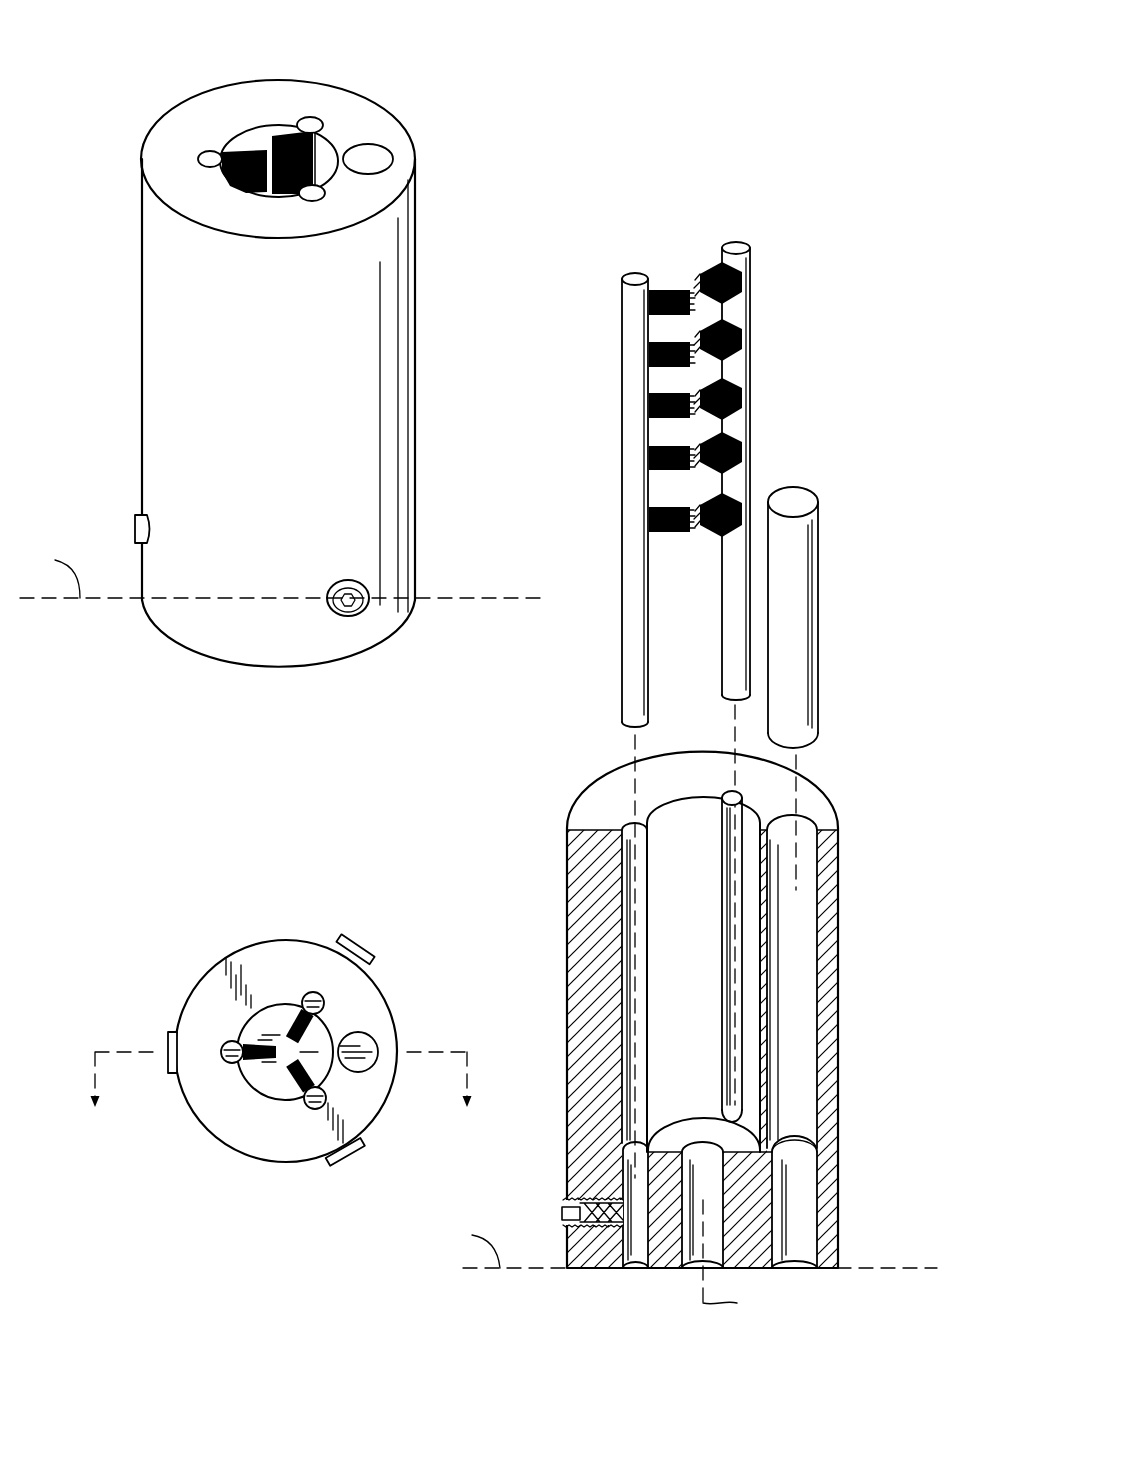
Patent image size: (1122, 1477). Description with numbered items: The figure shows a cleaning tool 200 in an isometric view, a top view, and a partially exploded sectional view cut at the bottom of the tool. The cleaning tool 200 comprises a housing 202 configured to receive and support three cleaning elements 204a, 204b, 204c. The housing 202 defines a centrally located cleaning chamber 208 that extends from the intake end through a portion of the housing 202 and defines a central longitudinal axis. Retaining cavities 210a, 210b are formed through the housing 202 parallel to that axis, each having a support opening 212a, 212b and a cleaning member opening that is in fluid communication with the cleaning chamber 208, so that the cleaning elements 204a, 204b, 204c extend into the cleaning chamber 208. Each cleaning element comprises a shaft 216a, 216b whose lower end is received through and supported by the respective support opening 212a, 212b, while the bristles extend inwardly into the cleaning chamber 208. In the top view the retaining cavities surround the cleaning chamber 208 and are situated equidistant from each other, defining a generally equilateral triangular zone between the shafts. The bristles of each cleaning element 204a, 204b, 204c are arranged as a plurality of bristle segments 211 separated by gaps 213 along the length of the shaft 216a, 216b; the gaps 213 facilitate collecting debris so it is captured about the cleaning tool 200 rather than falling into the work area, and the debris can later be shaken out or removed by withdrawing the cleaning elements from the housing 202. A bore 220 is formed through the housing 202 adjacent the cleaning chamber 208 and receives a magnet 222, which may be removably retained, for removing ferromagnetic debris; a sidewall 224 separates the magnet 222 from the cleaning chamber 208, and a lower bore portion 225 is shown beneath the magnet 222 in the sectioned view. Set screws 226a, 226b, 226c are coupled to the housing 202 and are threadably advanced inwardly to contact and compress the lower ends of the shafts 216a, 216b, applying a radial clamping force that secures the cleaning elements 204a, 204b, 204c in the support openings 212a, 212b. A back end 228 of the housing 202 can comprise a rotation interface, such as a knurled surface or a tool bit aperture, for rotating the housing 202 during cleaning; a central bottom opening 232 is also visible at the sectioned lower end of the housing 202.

In FIG. 4, the cleaning tool 200 is at (188, 56).
In FIG. 5, the cleaning tool 200 is at (164, 962).
In FIG. 6, the cleaning tool 200 is at (852, 547).
In FIG. 4, the housing 202 is at (390, 292).
In FIG. 5, the housing 202 is at (373, 1005).
In FIG. 6, the housing 202 is at (827, 1135).
In FIG. 4, the cleaning element 204a is at (200, 159).
In FIG. 5, the cleaning element 204a is at (226, 1046).
In FIG. 6, the cleaning element 204a is at (610, 311).
In FIG. 4, the cleaning element 204b is at (287, 126).
In FIG. 5, the cleaning element 204b is at (312, 998).
In FIG. 6, the cleaning element 204b is at (763, 213).
In FIG. 4, the cleaning element 204c is at (327, 195).
In FIG. 5, the cleaning element 204c is at (310, 1105).
In FIG. 4, the cleaning chamber 208 is at (253, 138).
In FIG. 5, the cleaning chamber 208 is at (278, 1017).
In FIG. 6, the cleaning chamber 208 is at (681, 833).
In FIG. 6, the retaining cavity 210a is at (632, 953).
In FIG. 6, the retaining cavity 210b is at (731, 800).
In FIG. 6, the bristle segments 211 is at (672, 343).
In FIG. 6, the support opening 212a is at (640, 1252).
In FIG. 6, the support opening 212b is at (727, 1113).
In FIG. 6, the gaps 213 is at (684, 377).
In FIG. 6, the shaft 216a is at (633, 462).
In FIG. 6, the shaft 216b is at (750, 297).
In FIG. 6, the bore 220 is at (805, 1045).
In FIG. 4, the magnet 222 is at (375, 160).
In FIG. 5, the magnet 222 is at (358, 1052).
In FIG. 6, the magnet 222 is at (805, 630).
In FIG. 6, the sidewall 224 is at (765, 968).
In FIG. 6, the lower pin bore 225 is at (798, 1213).
In FIG. 4, the set screw 226a is at (133, 532).
In FIG. 5, the set screw 226a is at (168, 1062).
In FIG. 6, the set screw 226a is at (562, 1217).
In FIG. 5, the set screw 226b is at (348, 950).
In FIG. 4, the set screw 226c is at (365, 592).
In FIG. 5, the set screw 226c is at (343, 1147).
In FIG. 4, the back end 228 is at (370, 647).
In FIG. 6, the central bottom opening 232 is at (698, 1193).